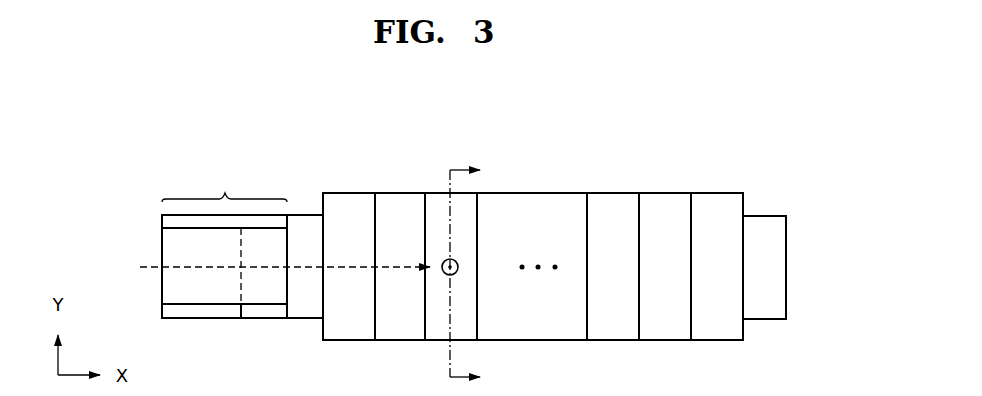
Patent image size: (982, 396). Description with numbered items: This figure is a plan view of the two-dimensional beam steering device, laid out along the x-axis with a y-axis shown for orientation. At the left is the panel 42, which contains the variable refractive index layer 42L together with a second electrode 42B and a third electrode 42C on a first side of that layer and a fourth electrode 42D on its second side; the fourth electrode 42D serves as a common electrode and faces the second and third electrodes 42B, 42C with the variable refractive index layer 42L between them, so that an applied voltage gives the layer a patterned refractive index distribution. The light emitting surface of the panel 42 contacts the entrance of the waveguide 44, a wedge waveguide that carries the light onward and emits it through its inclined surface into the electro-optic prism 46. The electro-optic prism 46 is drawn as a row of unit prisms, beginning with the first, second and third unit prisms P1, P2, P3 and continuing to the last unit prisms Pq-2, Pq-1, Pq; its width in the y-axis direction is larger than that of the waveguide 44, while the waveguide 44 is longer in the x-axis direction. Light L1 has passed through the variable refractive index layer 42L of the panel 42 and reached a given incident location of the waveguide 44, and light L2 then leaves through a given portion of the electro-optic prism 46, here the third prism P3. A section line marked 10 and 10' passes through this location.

The panel 42 is at (265, 269).
The fourth electrode 42D is at (168, 222).
The variable refractive index layer 42L is at (173, 278).
The second electrode 42B is at (173, 313).
The third electrode 42C is at (262, 312).
The waveguide 44 is at (304, 223).
The electro-optic prism 46 is at (552, 190).
The section line 10 is at (486, 269).
The section line end 10' is at (489, 379).
The first unit prism P1 is at (357, 200).
The second unit prism P2 is at (399, 200).
The third unit prism P3 is at (442, 200).
The unit prism Pq-2 is at (615, 198).
The unit prism Pq-1 is at (677, 198).
The unit prism Pq is at (731, 198).
The light L1 is at (350, 268).
The light L2 is at (447, 275).